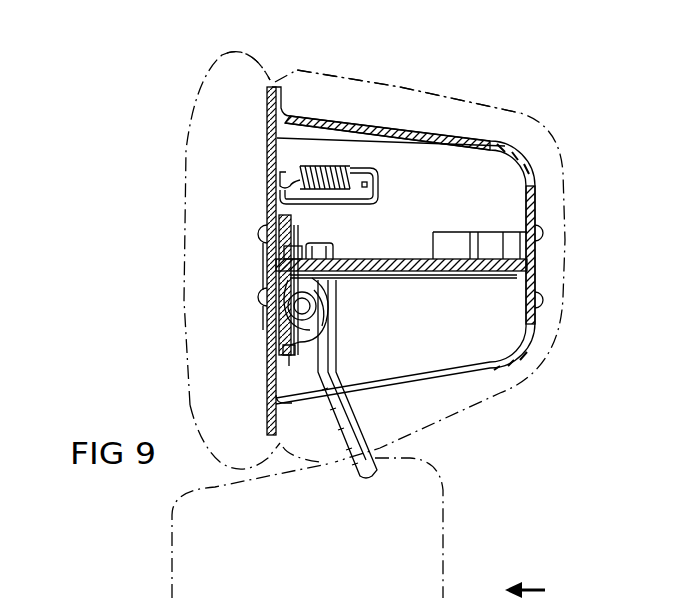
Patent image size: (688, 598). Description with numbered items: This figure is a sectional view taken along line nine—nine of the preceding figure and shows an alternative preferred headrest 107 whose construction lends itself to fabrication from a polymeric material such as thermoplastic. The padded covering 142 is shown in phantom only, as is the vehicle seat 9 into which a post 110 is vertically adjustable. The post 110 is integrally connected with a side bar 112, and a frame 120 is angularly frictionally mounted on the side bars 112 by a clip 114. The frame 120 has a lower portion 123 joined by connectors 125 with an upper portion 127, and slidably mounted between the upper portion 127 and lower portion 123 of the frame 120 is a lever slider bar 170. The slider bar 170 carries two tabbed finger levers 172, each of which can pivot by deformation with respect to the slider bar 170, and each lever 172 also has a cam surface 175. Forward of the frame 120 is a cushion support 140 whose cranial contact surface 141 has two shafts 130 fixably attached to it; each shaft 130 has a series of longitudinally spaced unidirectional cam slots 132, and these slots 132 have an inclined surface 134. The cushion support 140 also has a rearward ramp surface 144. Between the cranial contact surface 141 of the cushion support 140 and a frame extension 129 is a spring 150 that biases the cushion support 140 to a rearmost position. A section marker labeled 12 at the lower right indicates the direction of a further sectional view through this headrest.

The vehicle seat 9 is at (427, 485).
The section line 12- 12 is at (539, 587).
The headrest 107 is at (361, 70).
The post 110 is at (358, 433).
The side bar 112 is at (336, 328).
The clip 114 is at (318, 318).
The frame 120 is at (289, 360).
The lower portion 123 is at (350, 273).
The connectors 125 is at (325, 283).
The upper portion 127 is at (286, 250).
The frame extension 129 is at (378, 197).
The shafts 130 is at (469, 278).
The unidirectional cam slots 132 is at (420, 257).
The inclined surface 134 is at (377, 258).
The cushion support 140 is at (441, 135).
The cranial contact surface 141 is at (262, 92).
The padded covering 142 is at (198, 178).
The rearward ramp surface 144 is at (457, 240).
The spring 150 is at (340, 163).
The lever slider bar 170 is at (314, 251).
The tabbed finger lever 172 is at (270, 256).
The cam surface 175 is at (266, 320).